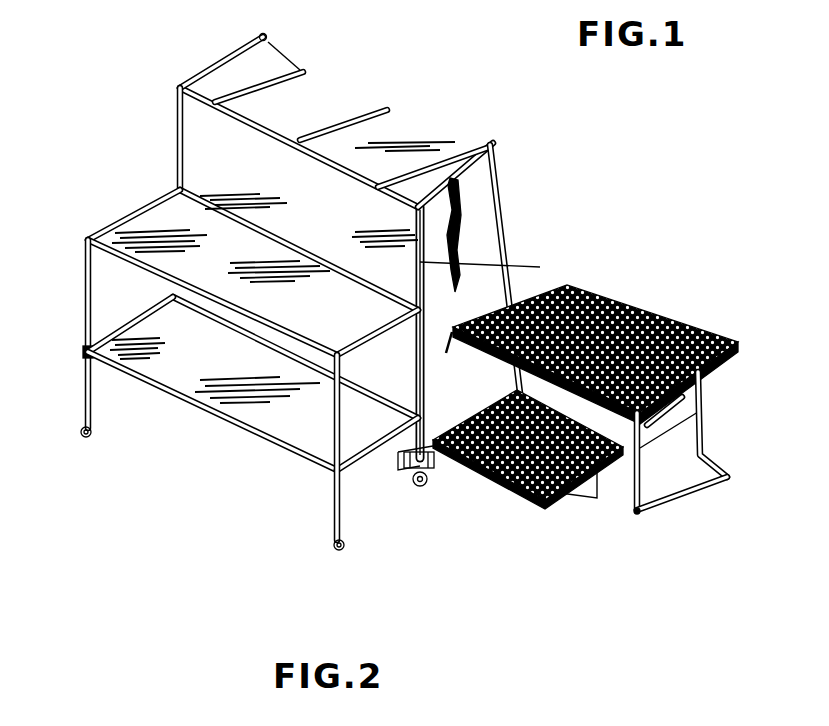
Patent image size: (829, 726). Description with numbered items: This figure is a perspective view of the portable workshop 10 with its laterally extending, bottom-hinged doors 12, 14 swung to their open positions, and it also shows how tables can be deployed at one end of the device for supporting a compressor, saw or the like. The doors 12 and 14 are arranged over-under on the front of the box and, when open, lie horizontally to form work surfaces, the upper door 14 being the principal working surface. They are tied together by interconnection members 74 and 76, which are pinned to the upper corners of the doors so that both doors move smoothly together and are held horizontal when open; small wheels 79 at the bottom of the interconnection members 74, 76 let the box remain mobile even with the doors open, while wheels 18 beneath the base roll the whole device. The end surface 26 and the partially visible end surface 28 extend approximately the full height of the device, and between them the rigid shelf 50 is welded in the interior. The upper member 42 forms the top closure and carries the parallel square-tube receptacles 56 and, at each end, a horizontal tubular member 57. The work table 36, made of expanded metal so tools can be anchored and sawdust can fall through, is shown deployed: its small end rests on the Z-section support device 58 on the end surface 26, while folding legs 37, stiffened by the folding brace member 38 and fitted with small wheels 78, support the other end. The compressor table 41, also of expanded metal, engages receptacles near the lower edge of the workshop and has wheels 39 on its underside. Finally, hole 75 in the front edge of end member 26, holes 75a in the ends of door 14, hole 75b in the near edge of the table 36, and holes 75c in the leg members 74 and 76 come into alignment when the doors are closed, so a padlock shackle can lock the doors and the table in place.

The portable workshop 10 is at (478, 245).
The lower door 12 is at (187, 377).
The upper door 14 is at (200, 272).
The wheels 18 is at (427, 490).
The end surface 26 is at (488, 192).
The end surface 28 is at (205, 152).
The work table 36 is at (586, 292).
The folding legs 37 is at (703, 450).
The folding brace member 38 is at (700, 408).
The wheels 39 is at (588, 493).
The compressor table 41 is at (507, 485).
The upper member 42 is at (338, 108).
The rigid shelf 50 is at (225, 186).
The receptacles 56 is at (297, 72).
The tubular member 57 is at (230, 62).
The support device 58 is at (447, 354).
The interconnection member 74 is at (330, 488).
The hole 75 is at (494, 235).
The hole 75a is at (142, 212).
The hole 75b is at (500, 352).
The hole 75c is at (87, 298).
The interconnection member 76 is at (85, 336).
The small wheels 78 is at (731, 477).
The small wheels 79 is at (82, 426).